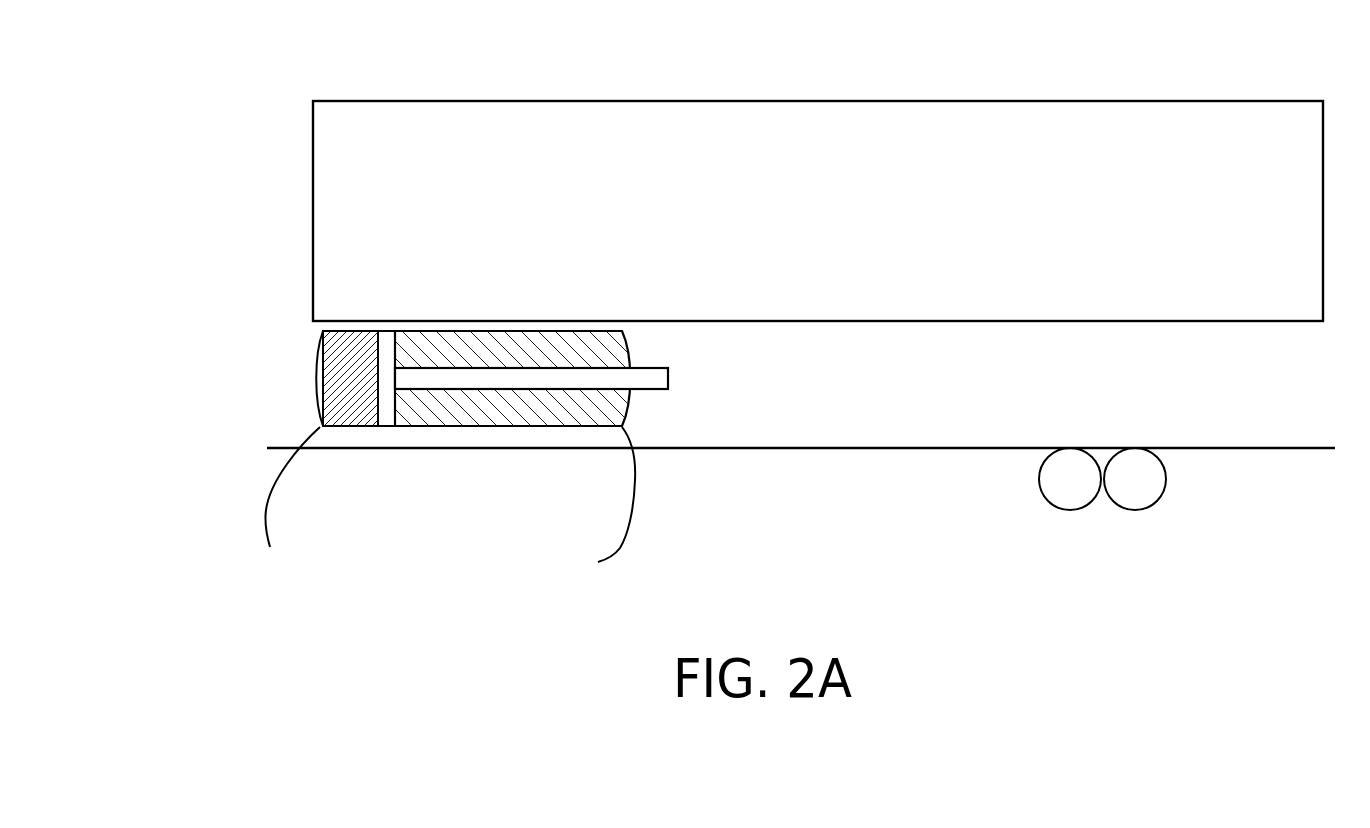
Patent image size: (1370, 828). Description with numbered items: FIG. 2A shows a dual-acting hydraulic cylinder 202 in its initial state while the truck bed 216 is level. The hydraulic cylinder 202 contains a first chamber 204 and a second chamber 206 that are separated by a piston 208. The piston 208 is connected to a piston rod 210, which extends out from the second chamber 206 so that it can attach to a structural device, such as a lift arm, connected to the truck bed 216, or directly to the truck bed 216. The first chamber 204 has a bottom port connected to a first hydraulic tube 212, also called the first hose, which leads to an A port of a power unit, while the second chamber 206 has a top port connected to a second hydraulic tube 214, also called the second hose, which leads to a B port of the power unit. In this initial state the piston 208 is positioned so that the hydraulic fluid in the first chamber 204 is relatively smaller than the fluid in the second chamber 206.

The hydraulic cylinder 202 is at (431, 421).
The first chamber 204 is at (337, 353).
The second chamber 206 is at (613, 350).
The piston 208 is at (385, 413).
The piston rod 210 is at (493, 380).
The first hydraulic tube 212 is at (244, 516).
The second hydraulic tube 214 is at (652, 506).
The truck bed 216 is at (1143, 134).